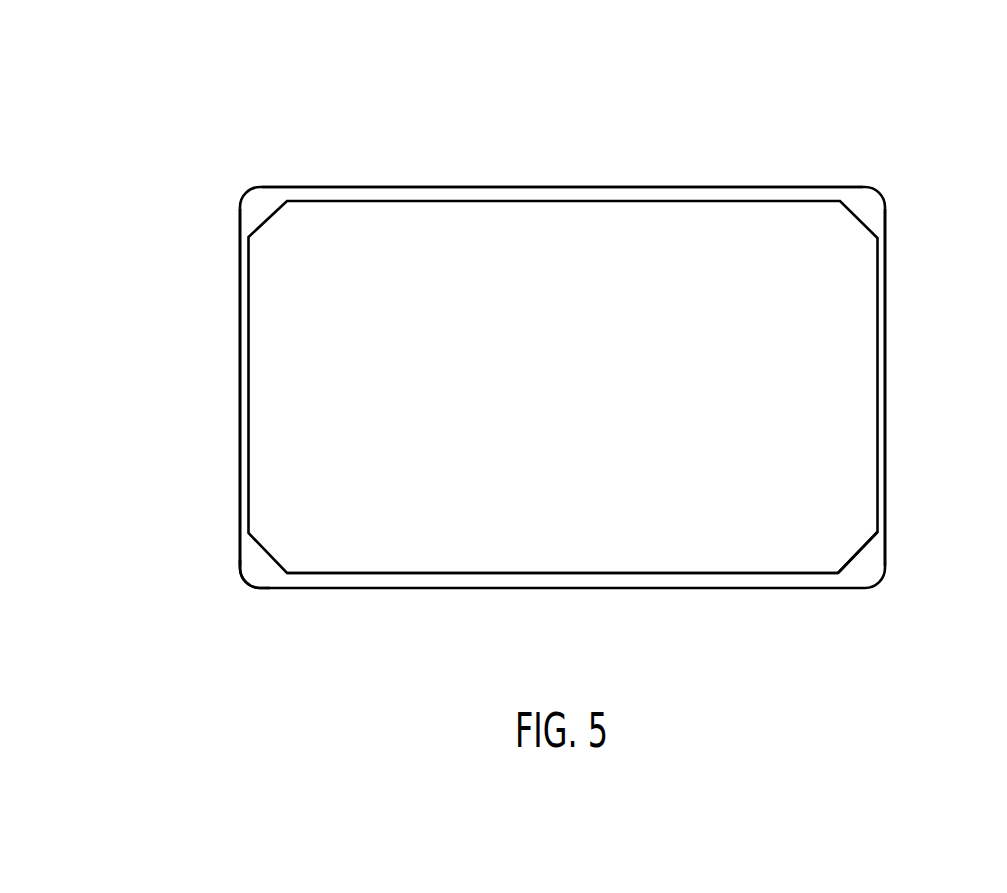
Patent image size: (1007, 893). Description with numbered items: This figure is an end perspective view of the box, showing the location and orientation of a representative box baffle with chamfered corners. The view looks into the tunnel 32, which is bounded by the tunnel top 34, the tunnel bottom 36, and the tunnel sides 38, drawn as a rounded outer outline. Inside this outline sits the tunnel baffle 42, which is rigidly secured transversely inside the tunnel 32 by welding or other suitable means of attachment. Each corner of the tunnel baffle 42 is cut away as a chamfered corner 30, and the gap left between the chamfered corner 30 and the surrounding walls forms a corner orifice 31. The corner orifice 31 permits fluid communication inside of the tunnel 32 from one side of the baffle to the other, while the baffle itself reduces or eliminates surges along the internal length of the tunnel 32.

The chamfered corner 30 is at (893, 515).
The corner orifice 31 is at (216, 602).
The tunnel 32 is at (250, 153).
The tunnel top 34 is at (562, 116).
The tunnel bottom 36 is at (562, 612).
The tunnel sides 38 is at (565, 387).
The tunnel baffle 42 is at (563, 387).